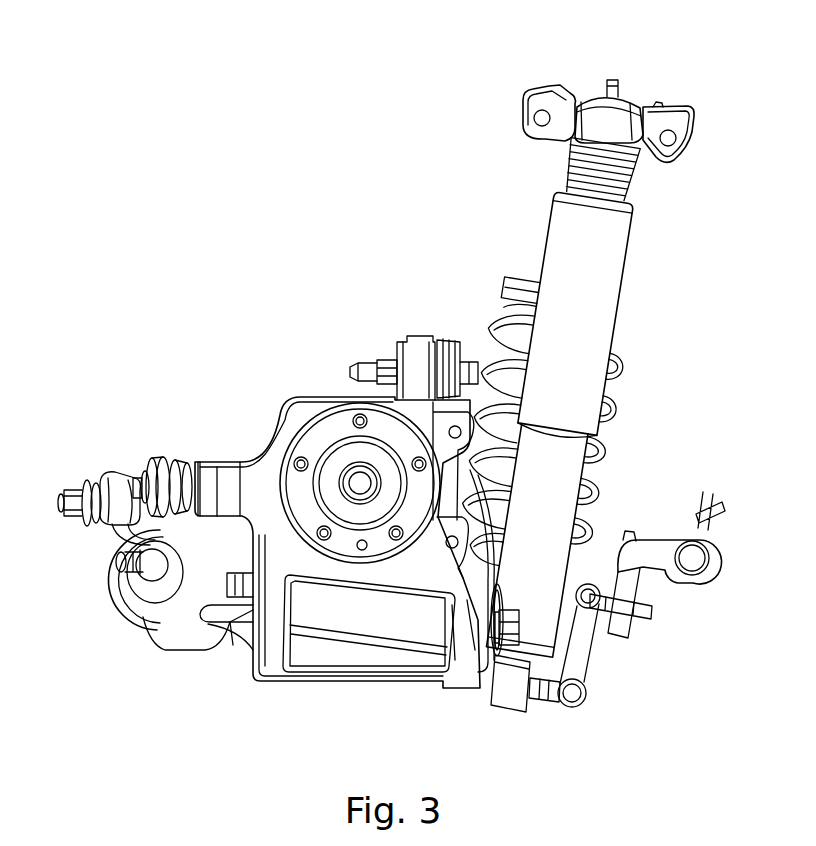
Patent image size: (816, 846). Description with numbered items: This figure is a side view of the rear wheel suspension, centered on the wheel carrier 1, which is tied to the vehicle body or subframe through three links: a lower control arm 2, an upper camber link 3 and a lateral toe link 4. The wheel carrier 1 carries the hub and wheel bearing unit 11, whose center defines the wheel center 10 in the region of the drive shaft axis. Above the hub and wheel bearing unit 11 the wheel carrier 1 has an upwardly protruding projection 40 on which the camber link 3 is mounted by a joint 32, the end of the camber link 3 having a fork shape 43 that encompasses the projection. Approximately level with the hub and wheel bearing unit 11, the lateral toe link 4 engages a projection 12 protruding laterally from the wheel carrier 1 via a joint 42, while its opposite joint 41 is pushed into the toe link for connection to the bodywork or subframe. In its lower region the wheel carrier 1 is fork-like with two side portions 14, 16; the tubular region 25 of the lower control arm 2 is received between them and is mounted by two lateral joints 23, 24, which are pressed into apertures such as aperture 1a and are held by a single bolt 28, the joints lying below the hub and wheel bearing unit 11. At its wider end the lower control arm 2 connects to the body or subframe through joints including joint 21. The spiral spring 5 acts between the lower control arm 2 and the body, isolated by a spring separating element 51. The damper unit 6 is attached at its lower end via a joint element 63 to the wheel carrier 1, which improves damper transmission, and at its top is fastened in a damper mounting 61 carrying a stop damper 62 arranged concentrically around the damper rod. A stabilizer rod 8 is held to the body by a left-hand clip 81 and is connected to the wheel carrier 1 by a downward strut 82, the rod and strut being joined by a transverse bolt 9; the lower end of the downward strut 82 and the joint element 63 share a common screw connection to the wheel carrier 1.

The wheel carrier 1 is at (284, 390).
The aperture 1a is at (506, 605).
The lower control arm 2 is at (205, 680).
The upper camber link 3 is at (411, 325).
The lateral toe link 4 is at (111, 458).
The spiral spring 5 is at (605, 447).
The damper unit 6 is at (641, 305).
The stabilizer rod 8 is at (678, 565).
The transverse bolt 9 is at (553, 697).
The wheel center 10 is at (358, 486).
The hub and wheel bearing unit 11 is at (343, 430).
The projection 12 is at (207, 465).
The side portion 14 is at (270, 600).
The side portion 16 is at (460, 620).
The joint 21 is at (148, 605).
The joint 23 is at (237, 633).
The joint 24 is at (480, 633).
The tubular region 25 is at (365, 620).
The bolt 28 is at (511, 616).
The joint 32 is at (438, 350).
The upwardly protruding projection 40 is at (420, 365).
The joint 41 is at (95, 492).
The joint 42 is at (165, 458).
The fork shape 43 is at (397, 345).
The spring separating element 51 is at (522, 287).
The damper mounting 61 is at (593, 117).
The stop damper 62 is at (625, 170).
The joint element 63 is at (512, 692).
The left-hand clip 81 is at (708, 560).
The downward strut 82 is at (583, 662).